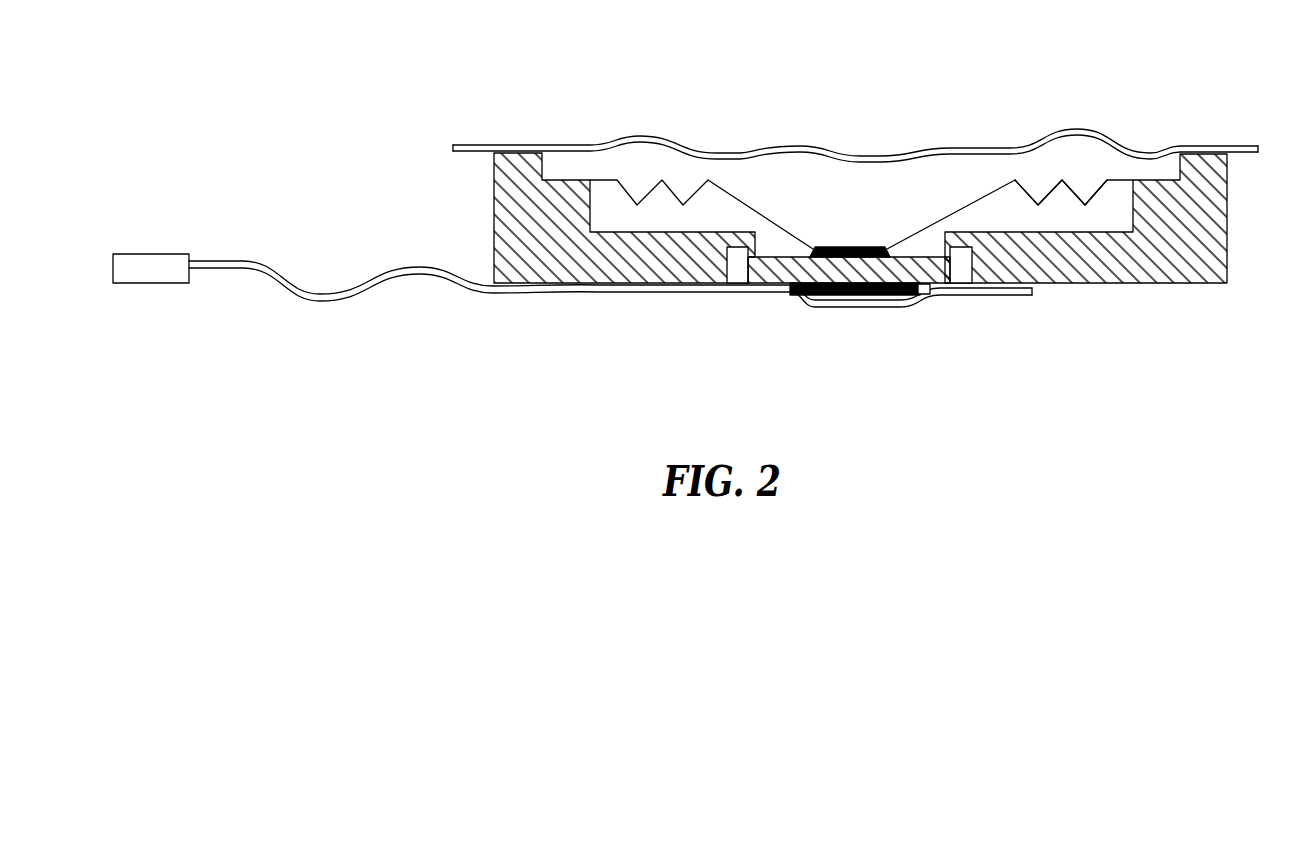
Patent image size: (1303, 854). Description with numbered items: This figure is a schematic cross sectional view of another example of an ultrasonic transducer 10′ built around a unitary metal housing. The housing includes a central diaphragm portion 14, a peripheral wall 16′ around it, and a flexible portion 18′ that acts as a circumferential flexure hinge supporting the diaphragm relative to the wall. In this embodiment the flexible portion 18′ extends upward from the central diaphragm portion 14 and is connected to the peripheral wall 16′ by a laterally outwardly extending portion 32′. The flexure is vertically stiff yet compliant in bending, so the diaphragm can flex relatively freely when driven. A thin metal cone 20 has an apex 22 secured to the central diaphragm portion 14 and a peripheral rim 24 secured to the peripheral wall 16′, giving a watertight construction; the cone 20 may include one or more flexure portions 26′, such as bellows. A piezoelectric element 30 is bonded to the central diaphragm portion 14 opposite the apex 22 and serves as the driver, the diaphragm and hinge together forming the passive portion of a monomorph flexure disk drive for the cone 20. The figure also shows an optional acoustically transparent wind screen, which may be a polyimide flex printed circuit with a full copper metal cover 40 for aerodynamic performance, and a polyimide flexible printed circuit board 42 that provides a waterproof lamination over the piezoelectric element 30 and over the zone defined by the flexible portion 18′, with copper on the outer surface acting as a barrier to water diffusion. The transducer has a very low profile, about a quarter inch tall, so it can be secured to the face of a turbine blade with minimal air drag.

The transducer 10′ is at (857, 120).
The central diaphragm portion 14 is at (932, 294).
The peripheral wall 16′ is at (1228, 211).
The flexible portion 18′ is at (970, 273).
The cone 20 is at (687, 170).
The apex 22 is at (847, 247).
The peripheral rim 24 is at (1152, 178).
The flexure portions 26′ is at (1088, 191).
The piezoelectric element 30 is at (798, 300).
The laterally outwardly extending portion 32′ is at (1122, 263).
The copper metal cover 40 is at (993, 147).
The polyimide flexible printed circuit board 42 is at (827, 306).